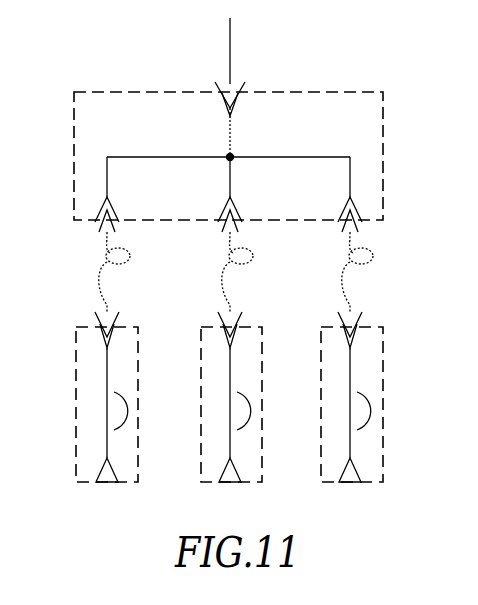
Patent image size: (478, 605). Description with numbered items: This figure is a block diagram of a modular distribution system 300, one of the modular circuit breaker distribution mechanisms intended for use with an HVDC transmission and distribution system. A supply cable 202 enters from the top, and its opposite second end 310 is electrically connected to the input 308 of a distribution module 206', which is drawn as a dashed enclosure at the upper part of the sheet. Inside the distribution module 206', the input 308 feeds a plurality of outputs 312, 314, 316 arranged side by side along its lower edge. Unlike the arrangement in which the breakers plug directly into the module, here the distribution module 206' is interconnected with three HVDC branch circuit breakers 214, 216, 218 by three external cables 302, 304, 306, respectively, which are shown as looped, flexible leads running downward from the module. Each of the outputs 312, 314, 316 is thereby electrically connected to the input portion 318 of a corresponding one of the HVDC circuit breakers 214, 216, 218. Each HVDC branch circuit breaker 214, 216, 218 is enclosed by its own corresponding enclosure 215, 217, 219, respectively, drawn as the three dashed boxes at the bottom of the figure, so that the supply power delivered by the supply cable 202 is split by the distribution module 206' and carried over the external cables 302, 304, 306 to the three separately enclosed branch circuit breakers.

The modular distribution system 300 is at (103, 71).
The supply cable 202 is at (229, 44).
The second end of the supply cable 310 is at (239, 88).
The input 308 is at (224, 105).
The distribution module 206' is at (252, 123).
The output 312 is at (109, 202).
The output 314 is at (233, 201).
The output 316 is at (355, 205).
The external cable 302 is at (99, 270).
The external cable 304 is at (222, 284).
The external cable 306 is at (342, 285).
The input portion 318 is at (113, 339).
The HVDC branch circuit breaker 214 is at (115, 393).
The HVDC branch circuit breaker 216 is at (239, 393).
The HVDC branch circuit breaker 218 is at (358, 393).
The enclosure 215 is at (76, 469).
The enclosure 217 is at (201, 469).
The enclosure 219 is at (321, 469).